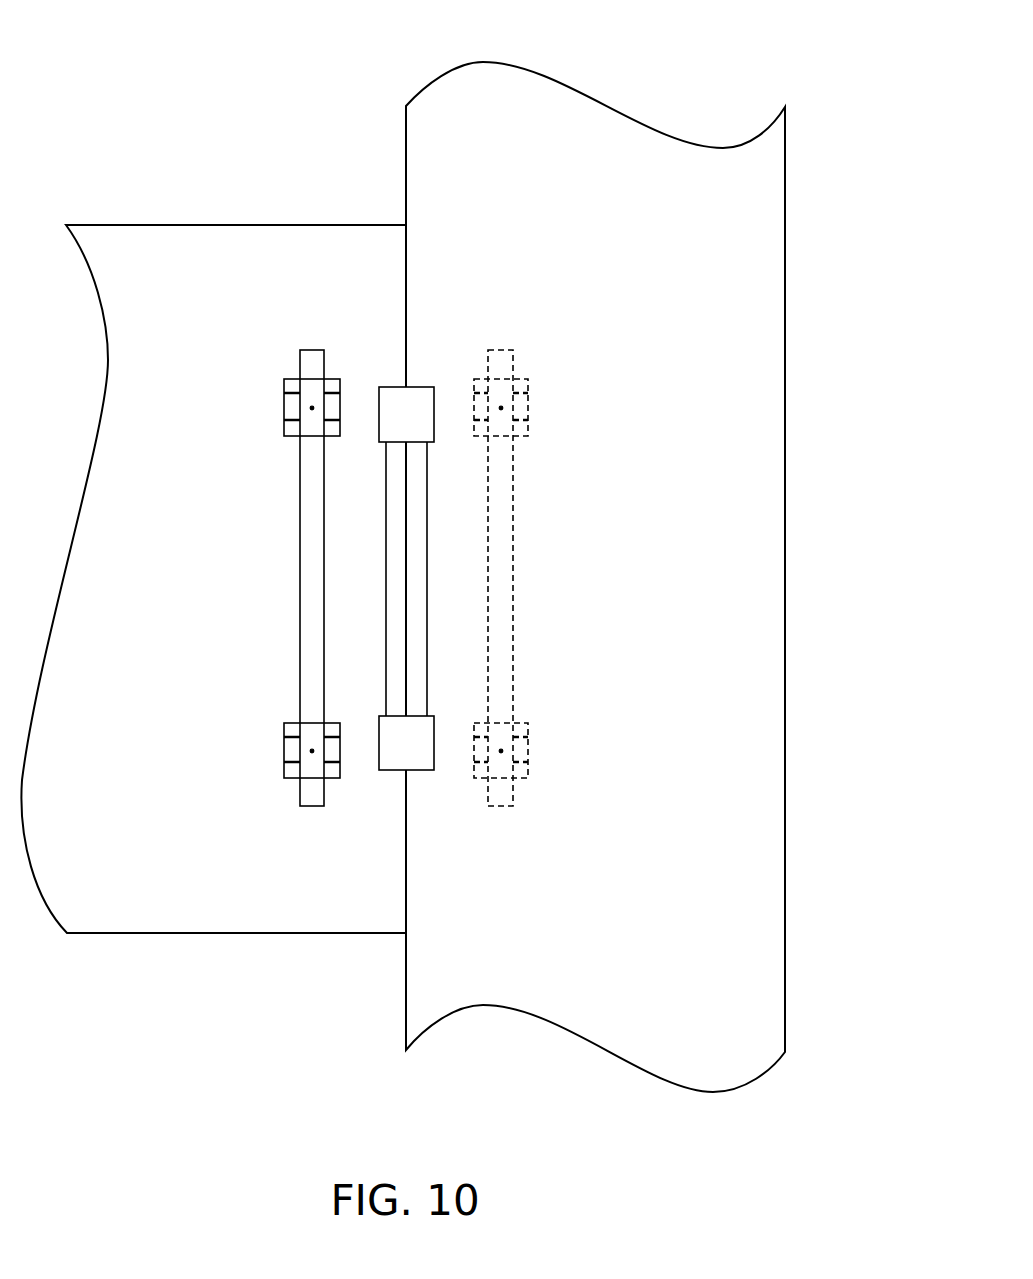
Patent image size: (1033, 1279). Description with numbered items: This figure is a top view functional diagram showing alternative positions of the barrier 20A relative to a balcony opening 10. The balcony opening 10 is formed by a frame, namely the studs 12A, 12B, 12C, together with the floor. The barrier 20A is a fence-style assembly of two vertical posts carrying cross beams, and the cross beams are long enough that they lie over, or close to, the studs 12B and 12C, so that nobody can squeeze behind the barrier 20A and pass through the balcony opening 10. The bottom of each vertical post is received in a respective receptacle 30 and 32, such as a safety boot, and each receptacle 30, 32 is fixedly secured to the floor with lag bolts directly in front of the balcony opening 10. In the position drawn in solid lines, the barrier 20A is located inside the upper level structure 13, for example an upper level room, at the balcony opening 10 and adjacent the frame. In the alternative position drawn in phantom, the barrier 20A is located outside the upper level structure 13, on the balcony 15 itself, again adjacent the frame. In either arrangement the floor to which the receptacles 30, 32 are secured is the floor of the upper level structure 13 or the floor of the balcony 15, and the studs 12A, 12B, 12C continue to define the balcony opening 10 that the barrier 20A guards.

The balcony opening 10 is at (387, 585).
The stud 12A is at (407, 564).
The stud 12B is at (405, 408).
The stud 12C is at (412, 751).
The upper level structure 13 is at (173, 267).
The balcony 15 is at (643, 217).
The barrier 20A is at (270, 576).
The receptacle 30 is at (284, 407).
The receptacle 32 is at (284, 750).